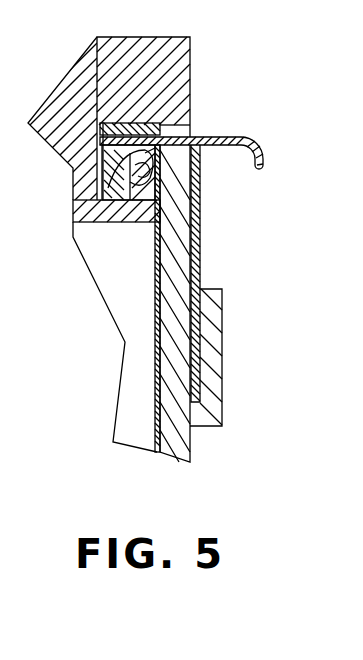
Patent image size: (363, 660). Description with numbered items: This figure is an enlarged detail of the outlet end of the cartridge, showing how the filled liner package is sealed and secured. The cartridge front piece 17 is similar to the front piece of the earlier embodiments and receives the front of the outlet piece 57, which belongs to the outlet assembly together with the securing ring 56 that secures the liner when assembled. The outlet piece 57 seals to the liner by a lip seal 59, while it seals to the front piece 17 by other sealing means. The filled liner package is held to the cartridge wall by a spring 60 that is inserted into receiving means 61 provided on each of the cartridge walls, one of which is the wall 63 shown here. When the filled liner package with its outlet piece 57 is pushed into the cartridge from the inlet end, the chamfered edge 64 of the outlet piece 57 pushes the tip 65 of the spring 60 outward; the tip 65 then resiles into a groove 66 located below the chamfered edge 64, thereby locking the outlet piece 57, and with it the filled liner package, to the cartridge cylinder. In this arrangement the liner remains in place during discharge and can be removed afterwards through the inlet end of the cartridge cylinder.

The cartridge front piece 17 is at (65, 104).
The chamfered edge 64 is at (198, 78).
The securing ring 56 is at (89, 161).
The tip of spring 65 is at (80, 182).
The outlet piece 57 is at (92, 220).
The groove 66 is at (183, 137).
The lip seal 59 is at (163, 210).
The cartridge wall 63 is at (178, 430).
The spring 60 is at (200, 255).
The receiving means 61 is at (215, 387).